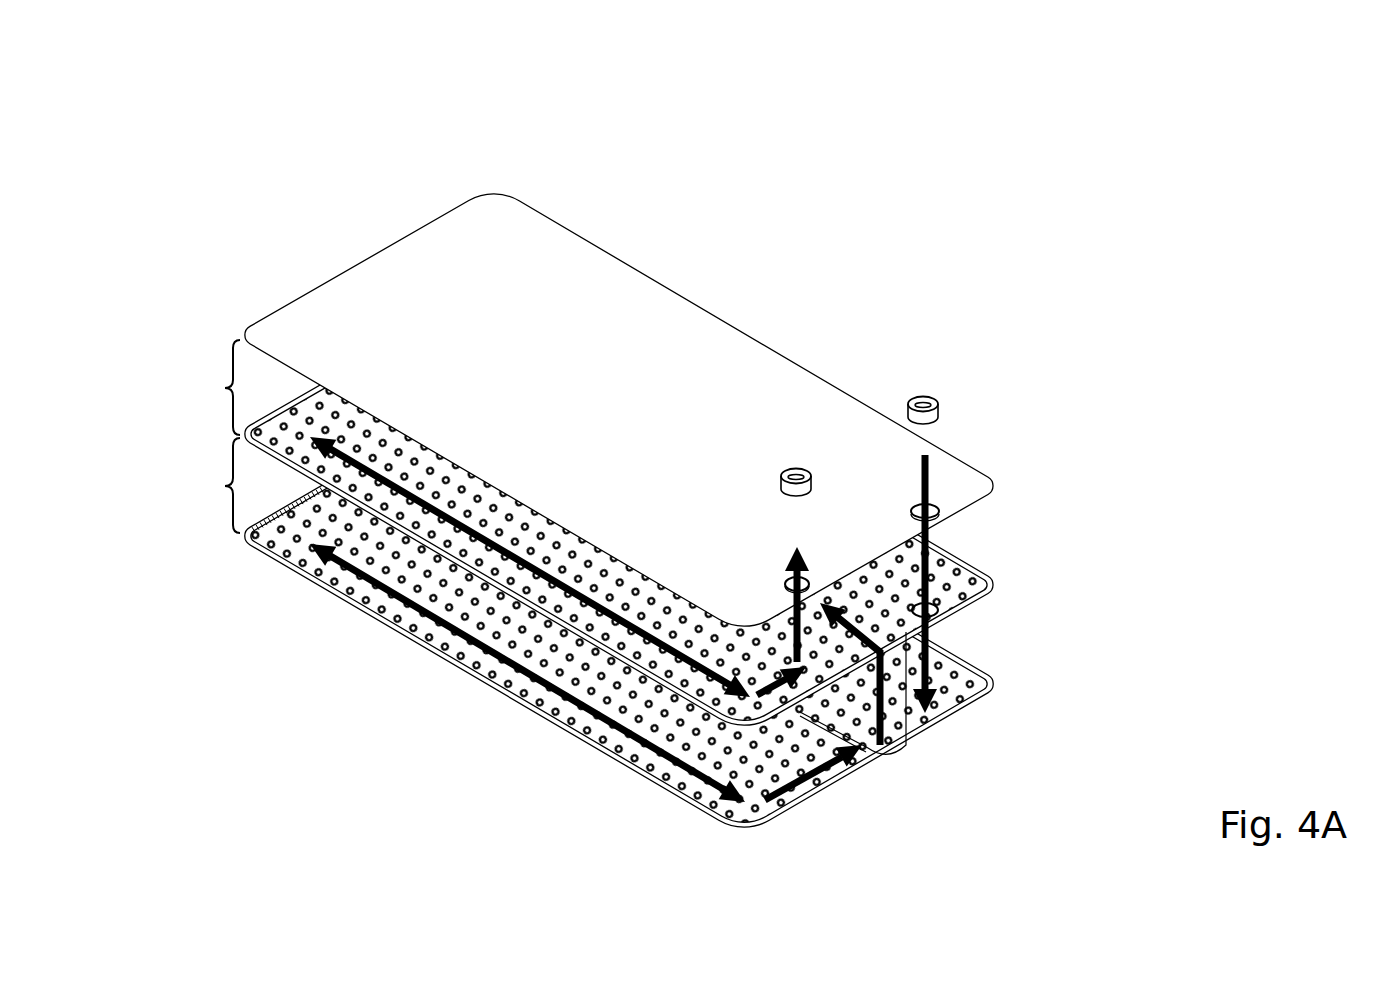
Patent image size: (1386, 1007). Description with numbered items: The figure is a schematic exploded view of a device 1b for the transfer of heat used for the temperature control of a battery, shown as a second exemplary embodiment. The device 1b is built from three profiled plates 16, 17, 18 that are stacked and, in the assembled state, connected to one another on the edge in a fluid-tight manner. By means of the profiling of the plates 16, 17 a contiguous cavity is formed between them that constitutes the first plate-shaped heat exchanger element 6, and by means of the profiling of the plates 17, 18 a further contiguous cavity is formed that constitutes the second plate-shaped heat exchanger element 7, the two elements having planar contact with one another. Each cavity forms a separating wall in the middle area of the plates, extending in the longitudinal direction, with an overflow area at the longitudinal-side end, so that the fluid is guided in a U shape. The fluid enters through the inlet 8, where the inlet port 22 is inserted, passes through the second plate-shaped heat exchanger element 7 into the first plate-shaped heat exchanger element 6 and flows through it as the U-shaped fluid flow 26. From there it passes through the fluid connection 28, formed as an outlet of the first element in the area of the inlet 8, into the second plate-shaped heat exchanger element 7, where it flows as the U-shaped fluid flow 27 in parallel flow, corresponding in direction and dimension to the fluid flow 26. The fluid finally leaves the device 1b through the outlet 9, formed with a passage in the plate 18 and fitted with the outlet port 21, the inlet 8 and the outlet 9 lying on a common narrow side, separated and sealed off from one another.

The device for the transfer of heat 1b is at (943, 158).
The first plate-shaped heat exchanger element 6 is at (225, 486).
The second plate-shaped heat exchanger element 7 is at (225, 388).
The inlet 8 is at (945, 507).
The outlet 9 is at (785, 558).
The plate 16 is at (997, 688).
The plate 17 is at (997, 586).
The plate 18 is at (998, 487).
The outlet port 21 is at (797, 464).
The inlet port 22 is at (935, 392).
The fluid flow 26 is at (500, 688).
The fluid flow 27 is at (862, 563).
The fluid connection 28 is at (903, 755).